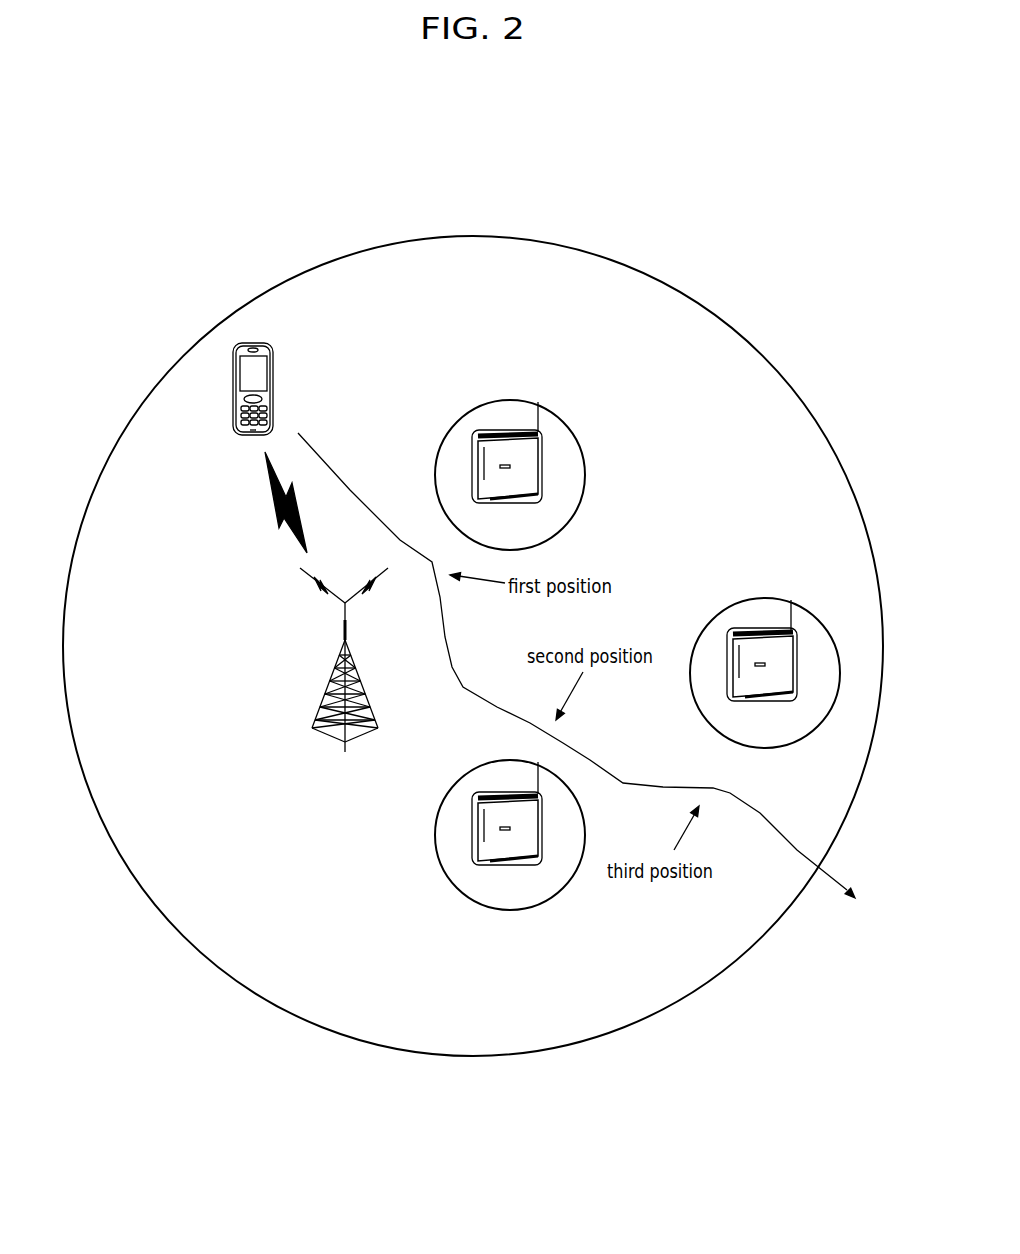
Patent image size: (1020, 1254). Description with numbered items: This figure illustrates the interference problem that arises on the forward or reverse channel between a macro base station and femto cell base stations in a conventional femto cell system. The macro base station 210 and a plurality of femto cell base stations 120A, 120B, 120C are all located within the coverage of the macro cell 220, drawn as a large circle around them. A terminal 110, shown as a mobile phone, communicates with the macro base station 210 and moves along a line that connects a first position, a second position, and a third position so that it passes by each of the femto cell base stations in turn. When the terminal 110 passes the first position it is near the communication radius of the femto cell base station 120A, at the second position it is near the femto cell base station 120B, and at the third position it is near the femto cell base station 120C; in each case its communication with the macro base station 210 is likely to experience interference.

The terminal 110 is at (258, 372).
The macro base station 210 is at (325, 688).
The femto cell base station 120A is at (574, 468).
The femto cell base station 120B is at (760, 603).
The femto cell base station 120C is at (512, 906).
The macro cell 220 is at (687, 998).